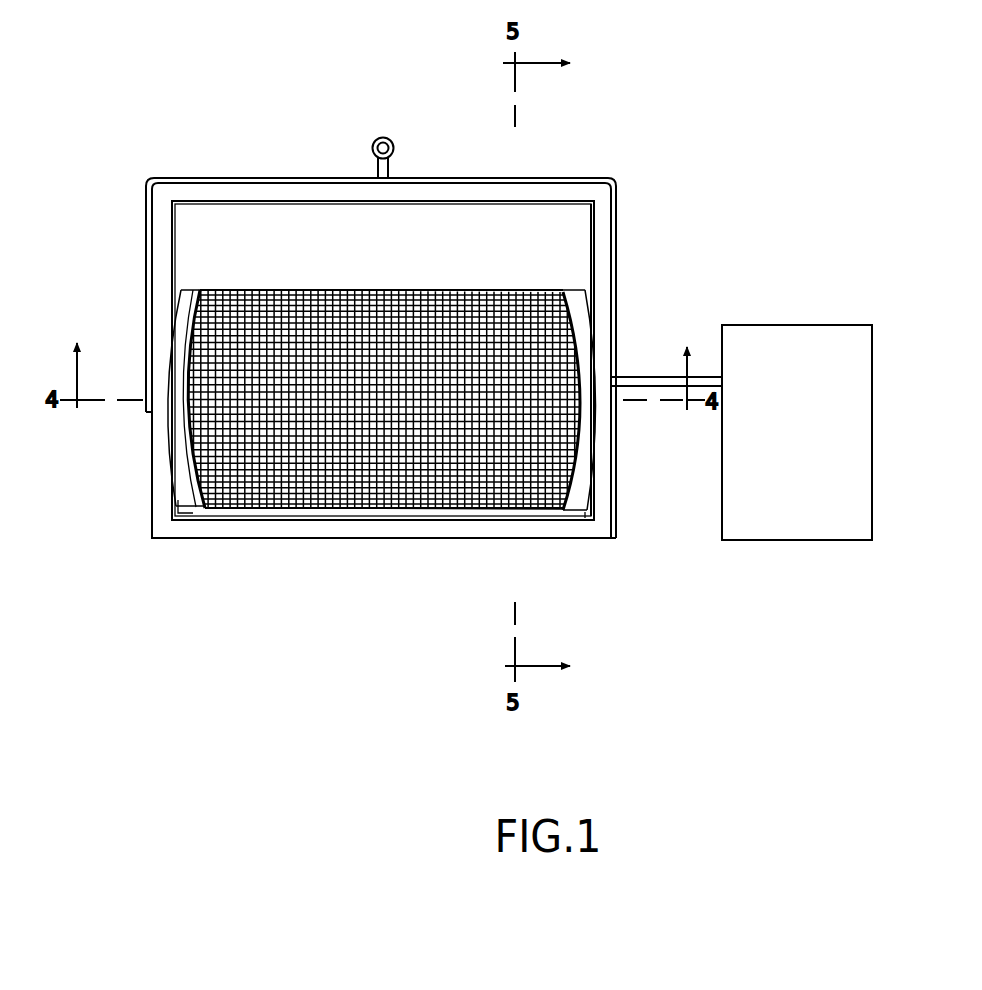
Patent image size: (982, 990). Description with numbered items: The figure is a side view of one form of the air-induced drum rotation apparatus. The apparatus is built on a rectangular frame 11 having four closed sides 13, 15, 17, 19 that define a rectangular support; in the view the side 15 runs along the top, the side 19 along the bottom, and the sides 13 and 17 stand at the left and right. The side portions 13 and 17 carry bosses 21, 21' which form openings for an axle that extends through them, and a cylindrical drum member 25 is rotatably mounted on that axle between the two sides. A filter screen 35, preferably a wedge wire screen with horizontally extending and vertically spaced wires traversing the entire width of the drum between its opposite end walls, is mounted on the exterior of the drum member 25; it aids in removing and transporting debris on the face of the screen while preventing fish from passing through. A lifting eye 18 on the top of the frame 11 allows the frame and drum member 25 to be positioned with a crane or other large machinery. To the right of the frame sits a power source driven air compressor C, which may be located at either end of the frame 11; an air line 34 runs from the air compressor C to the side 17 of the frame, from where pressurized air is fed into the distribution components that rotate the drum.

The rectangular frame 11 is at (178, 190).
The side 13 is at (155, 492).
The side 15 is at (463, 183).
The side 17 is at (615, 220).
The lifting eye 18 is at (387, 137).
The side 19 is at (403, 530).
The boss 21 is at (330, 321).
The boss 21' is at (627, 399).
The drum member 25 is at (213, 470).
The air line 34 is at (632, 377).
The filter screen 35 is at (325, 480).
The air compressor C is at (773, 337).